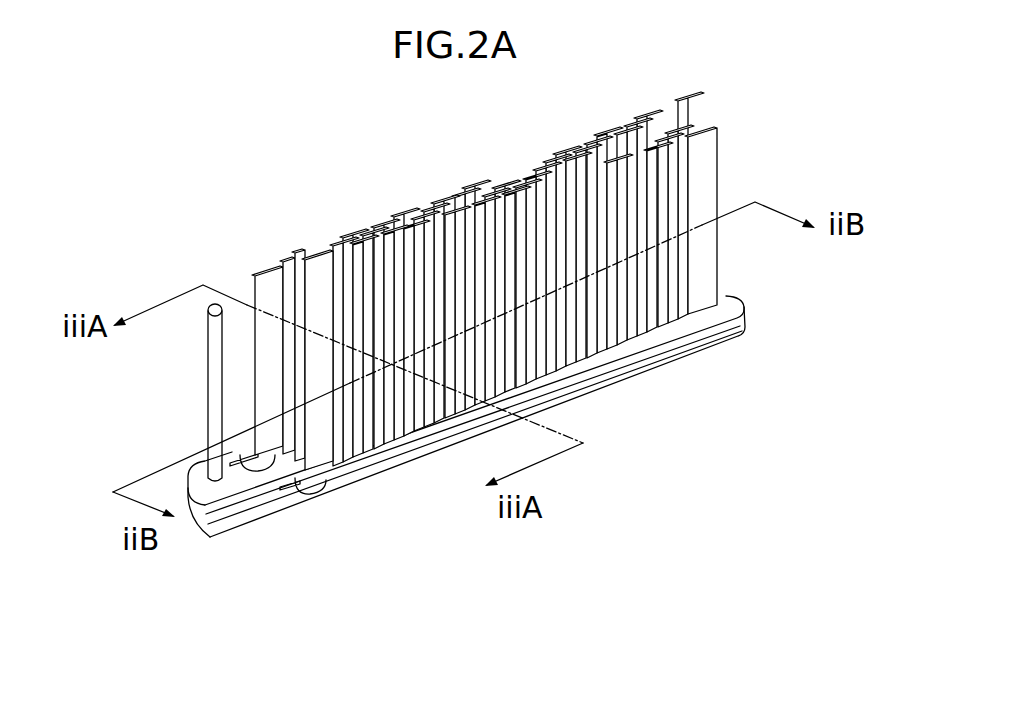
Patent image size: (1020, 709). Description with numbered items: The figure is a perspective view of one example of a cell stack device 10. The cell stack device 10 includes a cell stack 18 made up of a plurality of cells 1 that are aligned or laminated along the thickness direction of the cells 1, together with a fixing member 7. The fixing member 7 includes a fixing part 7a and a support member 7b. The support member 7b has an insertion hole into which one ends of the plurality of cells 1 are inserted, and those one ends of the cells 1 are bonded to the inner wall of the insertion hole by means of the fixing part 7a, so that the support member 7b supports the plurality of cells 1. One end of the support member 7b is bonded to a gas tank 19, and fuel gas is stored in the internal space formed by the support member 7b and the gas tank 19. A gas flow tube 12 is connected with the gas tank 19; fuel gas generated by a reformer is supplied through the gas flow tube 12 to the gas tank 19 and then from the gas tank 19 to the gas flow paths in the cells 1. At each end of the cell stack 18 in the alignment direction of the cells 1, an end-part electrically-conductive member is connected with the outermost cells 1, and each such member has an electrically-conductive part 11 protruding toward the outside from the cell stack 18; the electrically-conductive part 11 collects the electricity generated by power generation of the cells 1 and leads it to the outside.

The cell 1 is at (738, 211).
The fixing member 7 is at (466, 481).
The fixing part 7a is at (343, 483).
The support member 7b is at (428, 447).
The cell stack device 10 is at (249, 166).
The electrically-conductive part 11 is at (290, 486).
The gas flow tube 12 is at (216, 408).
The cell stack 18 is at (517, 269).
The gas tank 19 is at (663, 368).